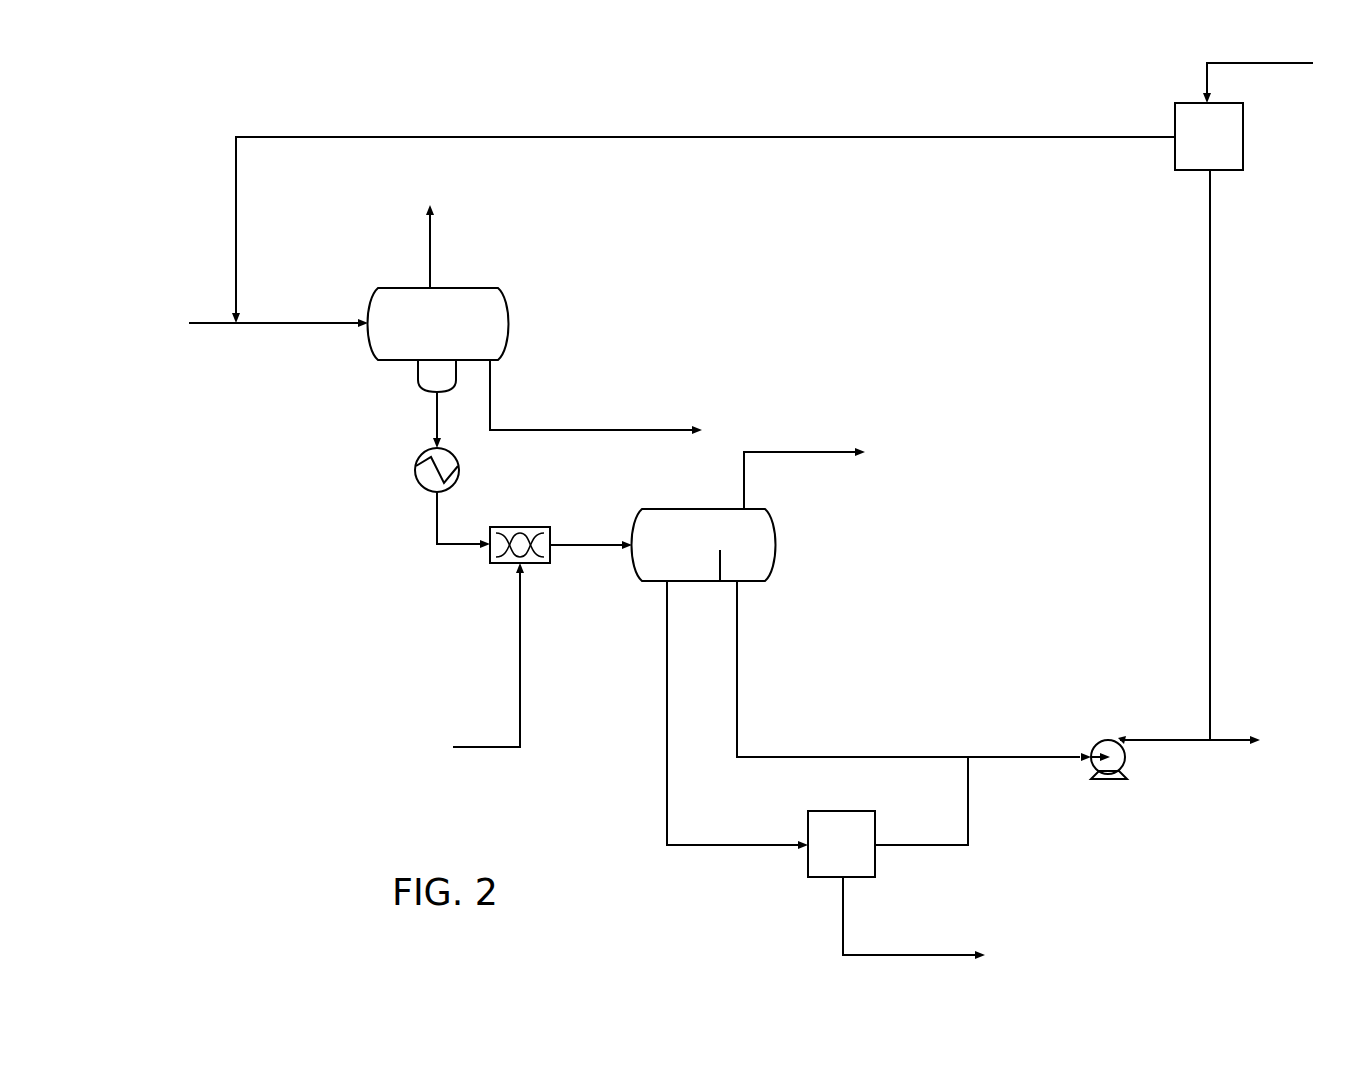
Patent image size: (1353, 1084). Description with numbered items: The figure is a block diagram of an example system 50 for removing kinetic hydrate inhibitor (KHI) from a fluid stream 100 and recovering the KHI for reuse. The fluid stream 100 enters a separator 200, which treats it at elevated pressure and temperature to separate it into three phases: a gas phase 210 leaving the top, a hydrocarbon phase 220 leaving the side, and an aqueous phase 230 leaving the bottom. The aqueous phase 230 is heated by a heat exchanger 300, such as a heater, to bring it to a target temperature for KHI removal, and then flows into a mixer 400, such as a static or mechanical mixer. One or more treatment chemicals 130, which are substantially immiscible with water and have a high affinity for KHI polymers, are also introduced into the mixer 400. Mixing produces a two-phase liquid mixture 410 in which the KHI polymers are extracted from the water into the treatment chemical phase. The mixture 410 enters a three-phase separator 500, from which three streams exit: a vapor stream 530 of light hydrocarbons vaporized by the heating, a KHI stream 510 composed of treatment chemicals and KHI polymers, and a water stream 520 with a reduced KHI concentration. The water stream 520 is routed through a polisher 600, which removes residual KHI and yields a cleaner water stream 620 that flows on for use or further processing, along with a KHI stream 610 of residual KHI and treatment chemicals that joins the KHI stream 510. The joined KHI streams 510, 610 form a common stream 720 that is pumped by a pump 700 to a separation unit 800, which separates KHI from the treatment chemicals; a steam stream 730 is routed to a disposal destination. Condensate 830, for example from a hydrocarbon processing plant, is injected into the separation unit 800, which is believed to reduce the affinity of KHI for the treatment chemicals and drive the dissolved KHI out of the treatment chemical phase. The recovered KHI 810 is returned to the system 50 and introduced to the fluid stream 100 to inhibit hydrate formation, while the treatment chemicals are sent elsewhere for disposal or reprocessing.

The system 50 is at (131, 183).
The fluid stream 100 is at (278, 297).
The treatment chemicals 130 is at (488, 655).
The separator 200 is at (438, 340).
The gas phase 210 is at (457, 246).
The hydrocarbon phase 220 is at (596, 397).
The aqueous phase 230 is at (432, 475).
The heat exchanger 300 is at (461, 470).
The mixer 400 is at (508, 563).
The two-phase liquid mixture 410 is at (591, 524).
The three-phase separator 500 is at (704, 545).
The KHI stream 510 is at (914, 671).
The water stream 520 is at (737, 715).
The vapor stream 530 is at (804, 465).
The polisher 600 is at (841, 844).
The KHI stream 610 is at (921, 801).
The water stream 620 is at (914, 918).
The pump 700 is at (1105, 774).
The common stream 720 is at (1187, 455).
The steam stream 730 is at (1194, 755).
The separation unit 800 is at (1209, 136).
The recovered KHI 810 is at (703, 214).
The condensate 830 is at (1258, 71).